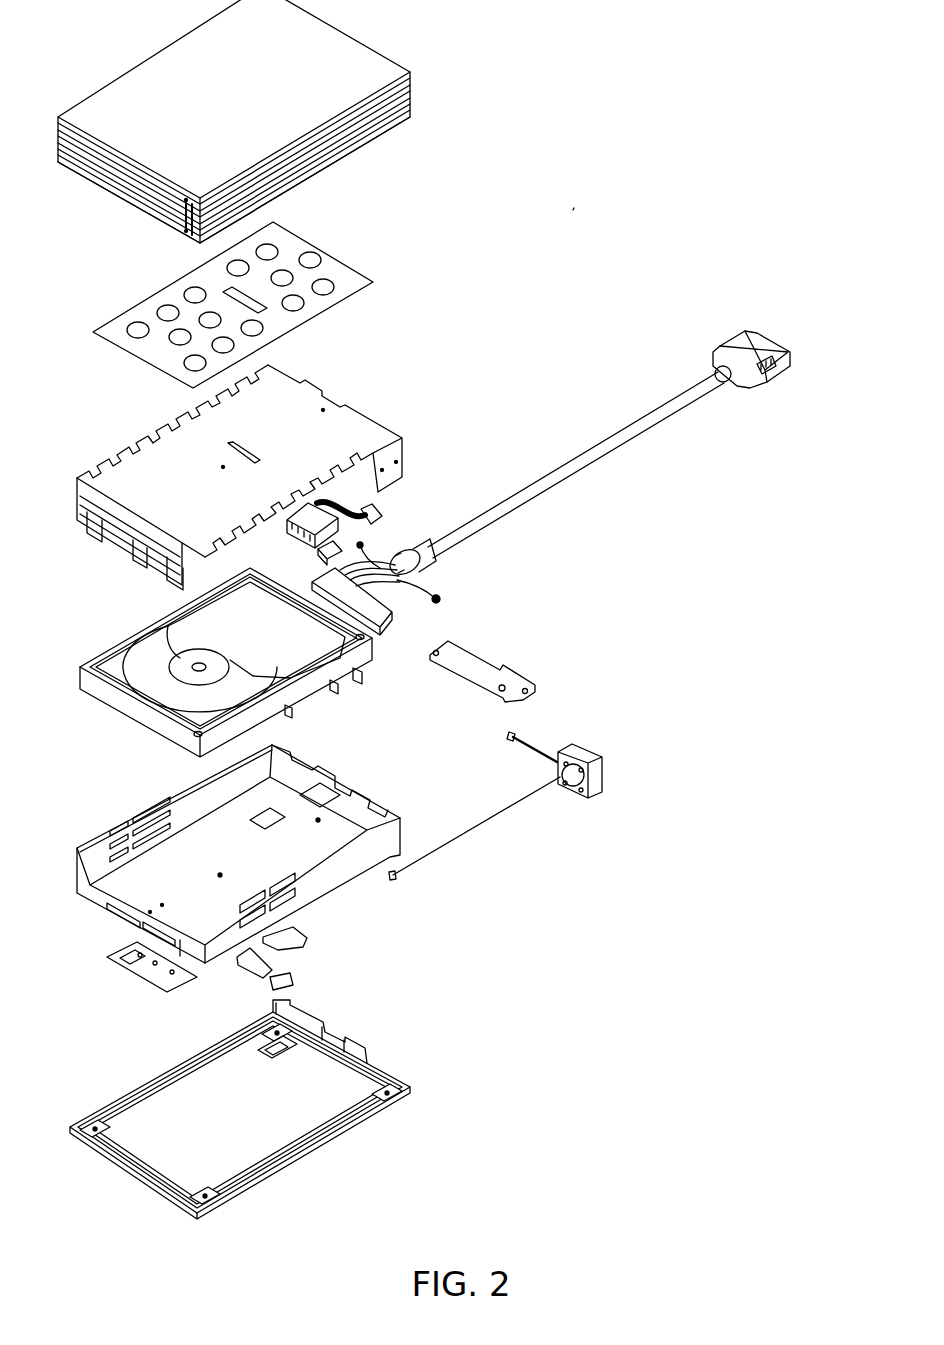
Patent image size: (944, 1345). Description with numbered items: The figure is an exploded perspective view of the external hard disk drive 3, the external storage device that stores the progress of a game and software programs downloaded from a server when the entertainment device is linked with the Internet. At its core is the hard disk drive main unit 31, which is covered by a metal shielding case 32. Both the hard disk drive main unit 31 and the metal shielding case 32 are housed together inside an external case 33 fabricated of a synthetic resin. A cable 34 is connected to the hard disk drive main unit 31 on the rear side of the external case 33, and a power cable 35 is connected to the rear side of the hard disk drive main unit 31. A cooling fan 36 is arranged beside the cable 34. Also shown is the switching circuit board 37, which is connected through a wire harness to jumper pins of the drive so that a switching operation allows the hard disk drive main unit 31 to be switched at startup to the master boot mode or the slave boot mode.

The external hard disk drive 3 is at (572, 213).
The hard disk drive main unit 31 is at (110, 662).
The metal shielding case 32 is at (123, 487).
The external case 33 is at (365, 63).
The cable 34 is at (550, 482).
The power cable 35 is at (350, 503).
The cooling fan 36 is at (583, 752).
The switching circuit board 37 is at (313, 553).